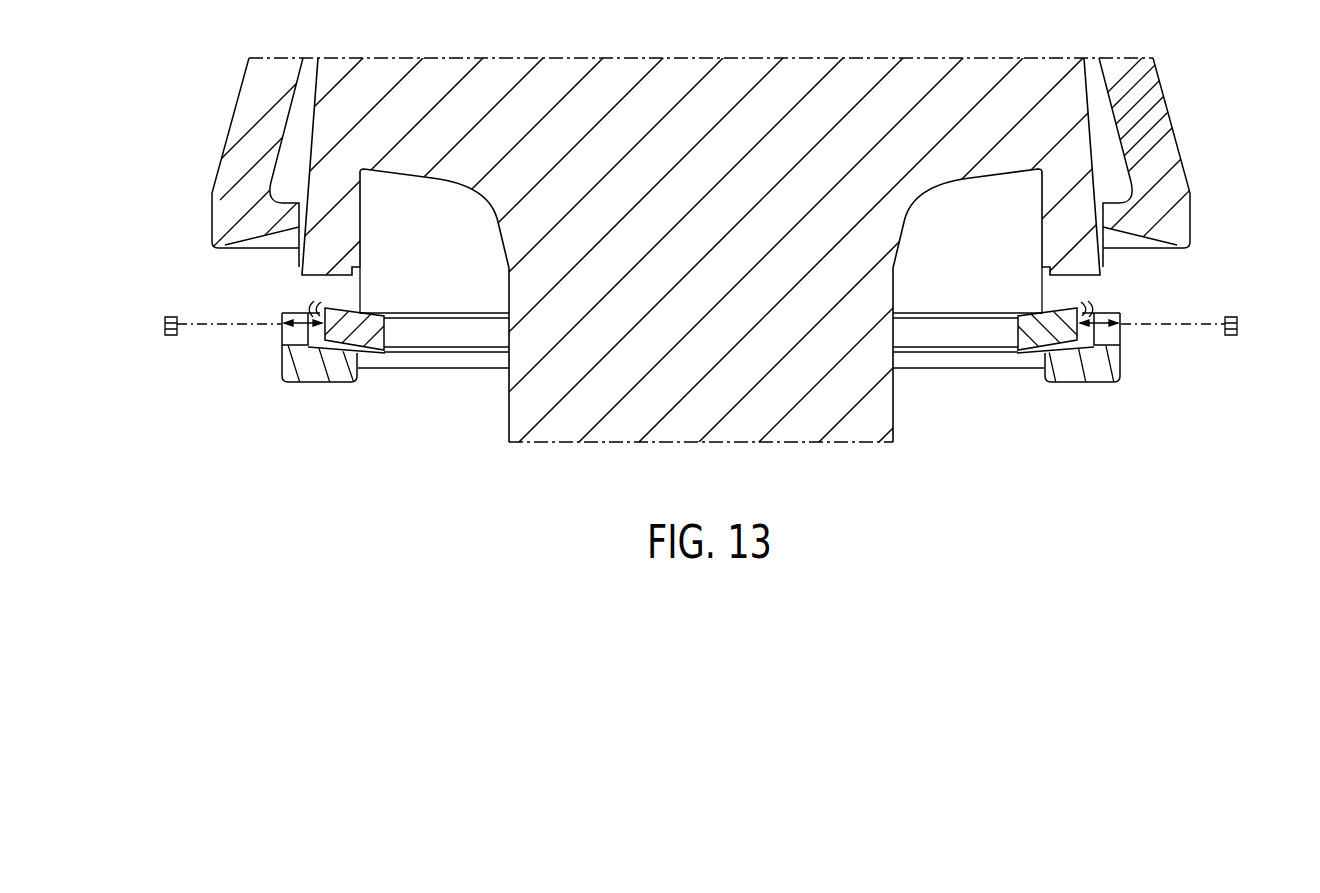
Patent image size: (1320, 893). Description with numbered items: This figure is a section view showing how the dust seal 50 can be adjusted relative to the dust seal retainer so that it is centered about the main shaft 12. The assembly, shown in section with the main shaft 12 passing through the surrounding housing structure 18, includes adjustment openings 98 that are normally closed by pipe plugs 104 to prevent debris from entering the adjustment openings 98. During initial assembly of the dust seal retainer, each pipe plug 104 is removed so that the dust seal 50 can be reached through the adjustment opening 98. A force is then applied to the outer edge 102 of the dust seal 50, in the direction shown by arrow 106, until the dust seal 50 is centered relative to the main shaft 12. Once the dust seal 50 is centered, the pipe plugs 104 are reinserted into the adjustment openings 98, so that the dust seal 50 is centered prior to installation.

The main shaft 12 is at (630, 418).
The housing shell 18 is at (242, 118).
The dust seal 50 is at (1033, 343).
The adjustment opening 98 is at (290, 318).
The outer edge 102 is at (304, 301).
The pipe plug 104 is at (165, 326).
The arrow 106 is at (1113, 318).